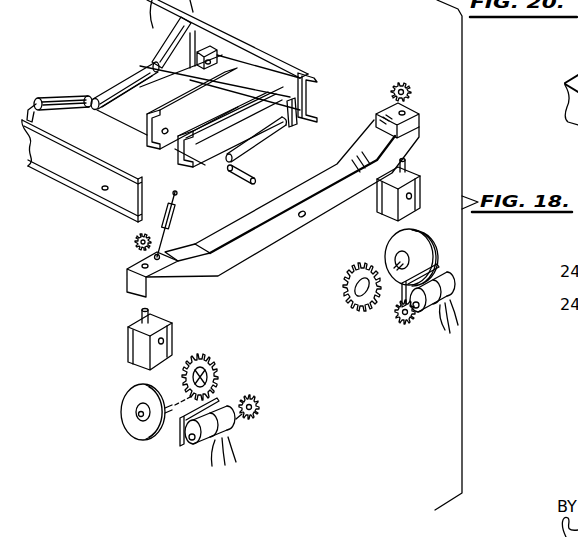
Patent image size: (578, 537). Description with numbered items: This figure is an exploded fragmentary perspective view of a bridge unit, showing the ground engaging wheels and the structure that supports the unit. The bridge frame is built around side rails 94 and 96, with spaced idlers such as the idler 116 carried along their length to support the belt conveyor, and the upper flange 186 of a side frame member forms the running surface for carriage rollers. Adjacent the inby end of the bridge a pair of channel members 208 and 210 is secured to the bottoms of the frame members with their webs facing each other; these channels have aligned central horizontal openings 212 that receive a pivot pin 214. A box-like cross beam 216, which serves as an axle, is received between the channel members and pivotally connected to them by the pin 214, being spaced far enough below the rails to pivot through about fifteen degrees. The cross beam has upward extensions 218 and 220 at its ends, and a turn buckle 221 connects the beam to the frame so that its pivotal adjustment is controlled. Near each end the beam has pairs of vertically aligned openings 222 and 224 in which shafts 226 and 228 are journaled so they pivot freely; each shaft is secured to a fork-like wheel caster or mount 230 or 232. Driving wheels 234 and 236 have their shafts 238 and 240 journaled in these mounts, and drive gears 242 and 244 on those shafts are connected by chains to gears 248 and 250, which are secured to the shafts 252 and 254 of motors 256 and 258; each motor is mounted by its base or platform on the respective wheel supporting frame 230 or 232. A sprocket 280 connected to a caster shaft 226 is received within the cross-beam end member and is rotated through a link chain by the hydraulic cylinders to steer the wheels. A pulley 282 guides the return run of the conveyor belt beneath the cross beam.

The side rail 94 is at (298, 72).
The side rail 96 is at (85, 176).
The idler 116 is at (68, 104).
The upper flange 186 is at (228, 32).
The channel member 208 is at (253, 60).
The channel member 210 is at (314, 80).
The horizontal opening 212 is at (162, 130).
The pivot pin 214 is at (252, 158).
The cross beam 216 is at (257, 238).
The upward extension 218 is at (408, 128).
The upward extension 220 is at (128, 278).
The turn buckle 221 is at (177, 213).
The vertically aligned openings 222 is at (160, 258).
The vertically aligned openings 224 is at (410, 107).
The shaft 226 is at (140, 313).
The shaft 228 is at (403, 162).
The wheel caster 230 is at (128, 342).
The wheel caster 232 is at (410, 185).
The driving wheel 234 is at (148, 433).
The driving wheel 236 is at (390, 248).
The shaft 238 is at (137, 415).
The shaft 240 is at (427, 246).
The drive gear 242 is at (220, 360).
The drive gear 244 is at (363, 268).
The gear 248 is at (256, 402).
The gear 250 is at (393, 322).
The motor shaft 252 is at (250, 423).
The motor shaft 254 is at (421, 318).
The motor 256 is at (205, 447).
The motor 258 is at (433, 294).
The sprocket 280 is at (133, 244).
The pulley 282 is at (277, 132).